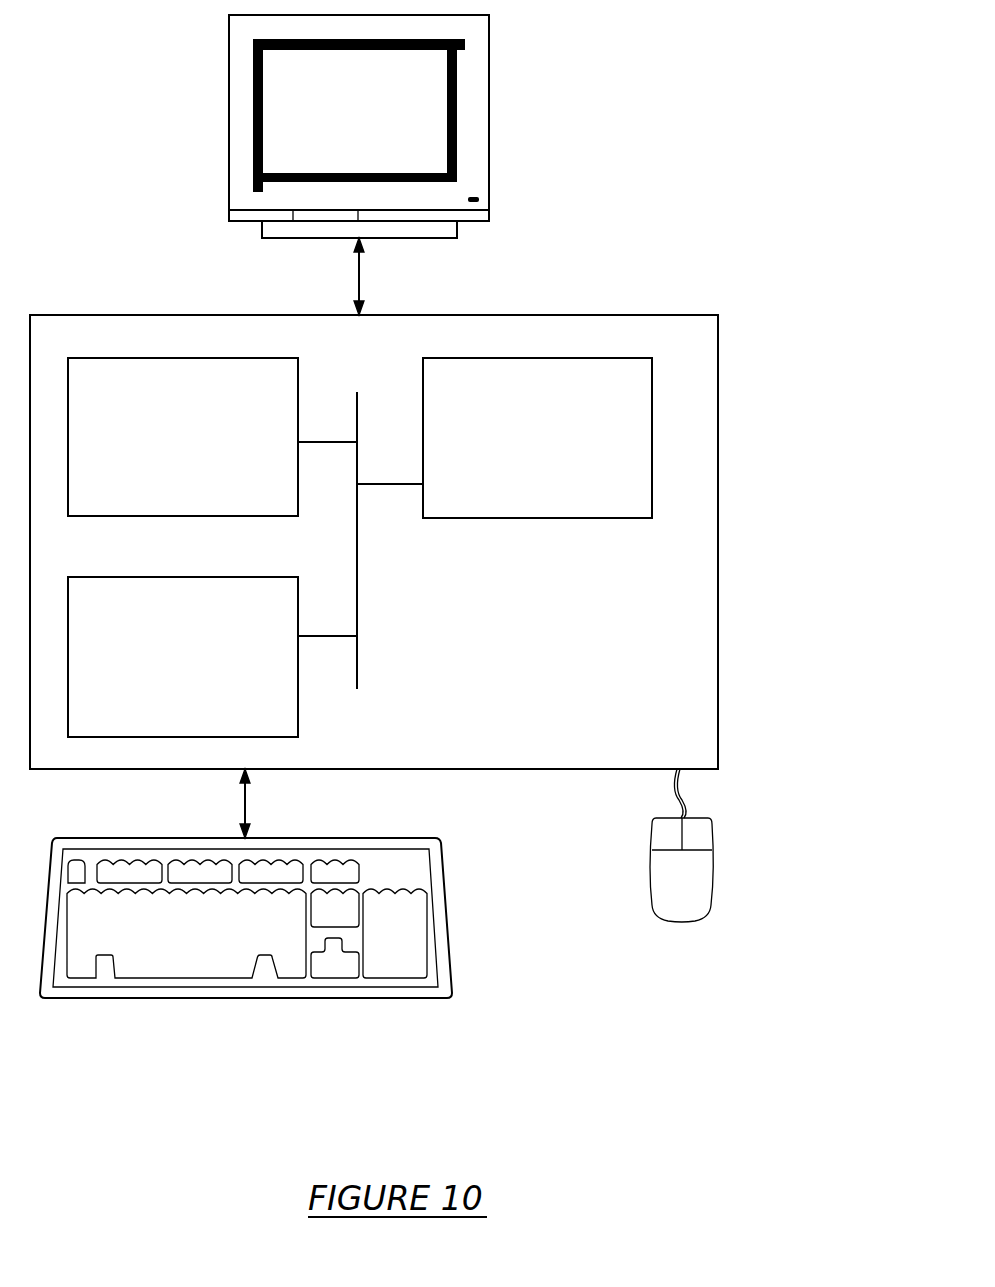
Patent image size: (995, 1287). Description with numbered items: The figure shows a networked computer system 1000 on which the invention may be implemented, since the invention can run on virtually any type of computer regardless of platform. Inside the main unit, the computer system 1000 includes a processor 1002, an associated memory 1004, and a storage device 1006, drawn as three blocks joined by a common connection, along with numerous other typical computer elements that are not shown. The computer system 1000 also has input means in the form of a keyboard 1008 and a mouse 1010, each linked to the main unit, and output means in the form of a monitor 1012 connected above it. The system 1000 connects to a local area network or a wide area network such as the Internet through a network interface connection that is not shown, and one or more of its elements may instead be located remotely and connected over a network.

The networked computer system 1000 is at (738, 170).
The processor 1002 is at (573, 449).
The memory 1004 is at (213, 449).
The storage device 1006 is at (210, 671).
The keyboard 1008 is at (206, 958).
The mouse 1010 is at (727, 869).
The monitor 1012 is at (387, 129).